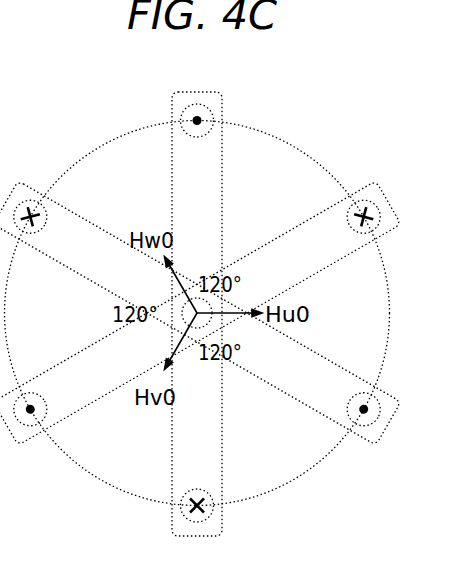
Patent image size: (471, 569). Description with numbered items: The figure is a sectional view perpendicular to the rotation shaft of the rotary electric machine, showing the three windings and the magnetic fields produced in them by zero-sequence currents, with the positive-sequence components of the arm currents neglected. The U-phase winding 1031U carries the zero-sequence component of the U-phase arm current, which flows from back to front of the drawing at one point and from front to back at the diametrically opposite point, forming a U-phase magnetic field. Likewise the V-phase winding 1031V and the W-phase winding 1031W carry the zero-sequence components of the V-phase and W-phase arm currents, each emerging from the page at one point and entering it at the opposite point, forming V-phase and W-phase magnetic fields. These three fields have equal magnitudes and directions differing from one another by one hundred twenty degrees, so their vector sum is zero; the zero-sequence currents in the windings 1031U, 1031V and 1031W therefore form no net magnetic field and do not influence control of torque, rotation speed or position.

The U-phase winding 1031U is at (198, 94).
The V-phase winding 1031V is at (372, 442).
The W-phase winding 1031W is at (25, 438).